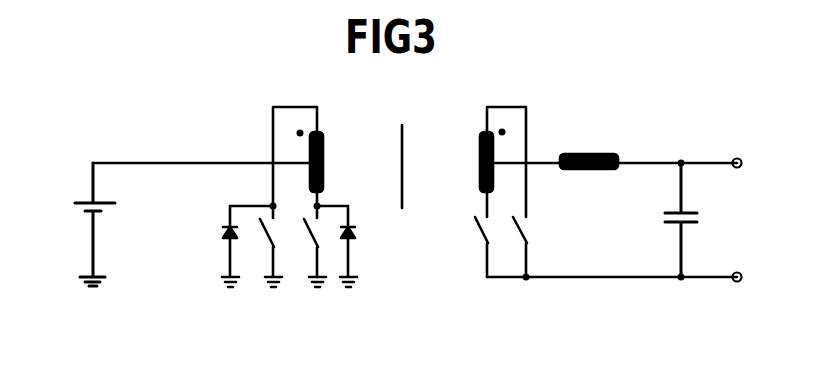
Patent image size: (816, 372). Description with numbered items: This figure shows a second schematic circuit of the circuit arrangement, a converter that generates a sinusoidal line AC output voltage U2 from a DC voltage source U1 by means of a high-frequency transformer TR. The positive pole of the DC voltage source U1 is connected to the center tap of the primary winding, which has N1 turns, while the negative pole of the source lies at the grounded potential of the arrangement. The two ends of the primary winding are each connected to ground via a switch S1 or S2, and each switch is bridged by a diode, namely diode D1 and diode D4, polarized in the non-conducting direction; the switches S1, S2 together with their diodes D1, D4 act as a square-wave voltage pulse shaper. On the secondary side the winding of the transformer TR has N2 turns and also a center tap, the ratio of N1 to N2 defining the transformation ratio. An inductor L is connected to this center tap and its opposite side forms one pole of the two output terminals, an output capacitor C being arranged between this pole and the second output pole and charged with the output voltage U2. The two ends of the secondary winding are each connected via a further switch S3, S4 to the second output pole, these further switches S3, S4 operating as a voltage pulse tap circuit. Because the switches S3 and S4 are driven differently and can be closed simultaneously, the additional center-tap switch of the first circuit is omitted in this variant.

The DC voltage source U1 is at (55, 185).
The number of turns of the primary winding N1 is at (298, 138).
The high-frequency transformer TR is at (400, 139).
The number of turns of the secondary winding N2 is at (503, 143).
The diode D1 is at (218, 246).
The switch S1 is at (263, 246).
The switch S2 is at (308, 246).
The diode D4 is at (361, 246).
The further switch S3 is at (471, 247).
The further switch S4 is at (533, 247).
The inductor L is at (589, 143).
The output capacitor C is at (684, 220).
The output voltage U2 is at (755, 177).